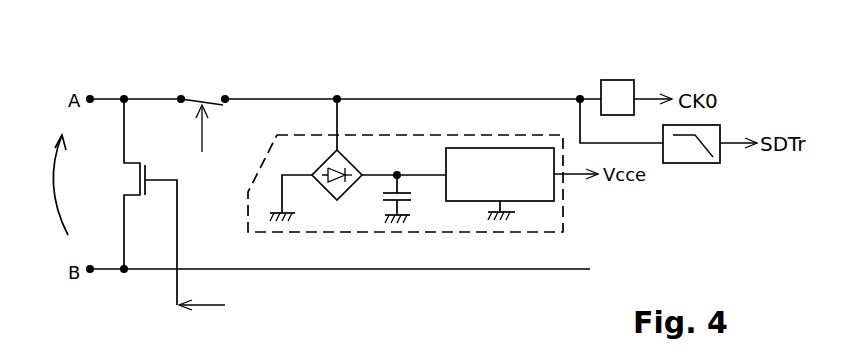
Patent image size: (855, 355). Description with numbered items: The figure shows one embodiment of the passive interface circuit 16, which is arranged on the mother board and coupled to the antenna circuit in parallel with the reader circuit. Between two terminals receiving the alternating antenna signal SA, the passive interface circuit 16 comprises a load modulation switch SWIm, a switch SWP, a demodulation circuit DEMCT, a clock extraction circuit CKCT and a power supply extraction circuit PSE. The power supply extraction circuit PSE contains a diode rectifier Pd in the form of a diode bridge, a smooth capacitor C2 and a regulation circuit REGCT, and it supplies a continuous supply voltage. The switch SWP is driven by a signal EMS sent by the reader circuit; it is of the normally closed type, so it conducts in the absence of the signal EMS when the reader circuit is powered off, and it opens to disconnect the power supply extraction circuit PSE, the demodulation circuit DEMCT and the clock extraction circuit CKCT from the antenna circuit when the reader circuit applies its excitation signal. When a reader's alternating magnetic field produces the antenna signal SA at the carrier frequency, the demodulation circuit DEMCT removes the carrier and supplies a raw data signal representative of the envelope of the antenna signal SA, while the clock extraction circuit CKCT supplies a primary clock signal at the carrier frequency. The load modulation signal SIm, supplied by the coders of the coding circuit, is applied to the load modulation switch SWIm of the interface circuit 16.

The passive interface circuit 16 is at (134, 308).
The antenna signal SA is at (44, 185).
The switch SWP is at (200, 104).
The signal EMS is at (203, 142).
The load modulation switch SWIm is at (121, 202).
The load modulation signal SIm is at (222, 306).
The power supply extraction circuit PSE is at (474, 233).
The diode rectifier Pd is at (350, 153).
The smooth capacitor C2 is at (388, 203).
The regulation circuit REGCT is at (542, 187).
The clock extraction circuit CKCT is at (615, 90).
The demodulation circuit DEMCT is at (686, 163).